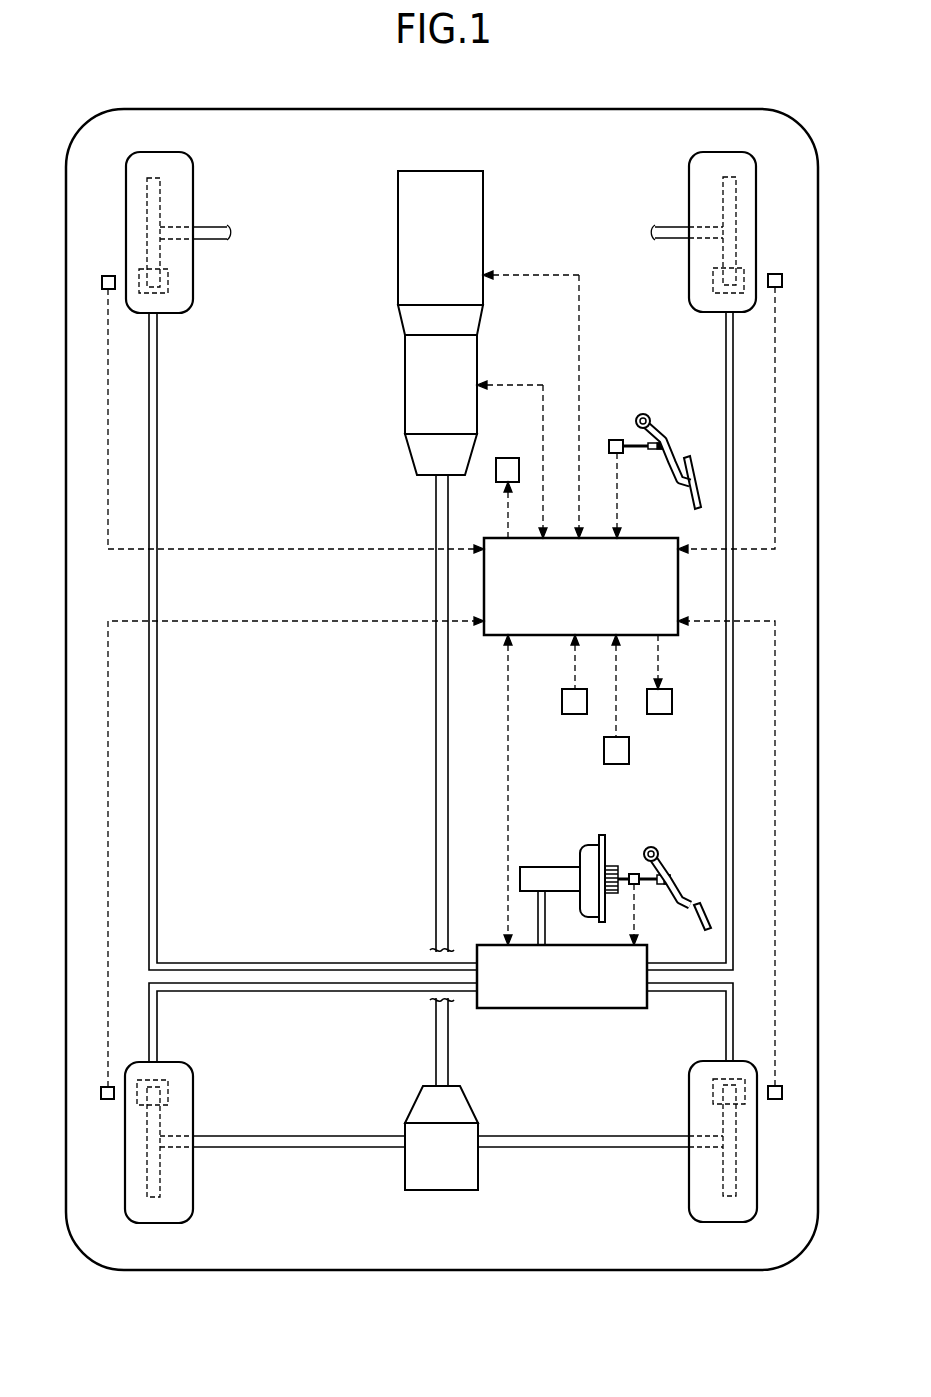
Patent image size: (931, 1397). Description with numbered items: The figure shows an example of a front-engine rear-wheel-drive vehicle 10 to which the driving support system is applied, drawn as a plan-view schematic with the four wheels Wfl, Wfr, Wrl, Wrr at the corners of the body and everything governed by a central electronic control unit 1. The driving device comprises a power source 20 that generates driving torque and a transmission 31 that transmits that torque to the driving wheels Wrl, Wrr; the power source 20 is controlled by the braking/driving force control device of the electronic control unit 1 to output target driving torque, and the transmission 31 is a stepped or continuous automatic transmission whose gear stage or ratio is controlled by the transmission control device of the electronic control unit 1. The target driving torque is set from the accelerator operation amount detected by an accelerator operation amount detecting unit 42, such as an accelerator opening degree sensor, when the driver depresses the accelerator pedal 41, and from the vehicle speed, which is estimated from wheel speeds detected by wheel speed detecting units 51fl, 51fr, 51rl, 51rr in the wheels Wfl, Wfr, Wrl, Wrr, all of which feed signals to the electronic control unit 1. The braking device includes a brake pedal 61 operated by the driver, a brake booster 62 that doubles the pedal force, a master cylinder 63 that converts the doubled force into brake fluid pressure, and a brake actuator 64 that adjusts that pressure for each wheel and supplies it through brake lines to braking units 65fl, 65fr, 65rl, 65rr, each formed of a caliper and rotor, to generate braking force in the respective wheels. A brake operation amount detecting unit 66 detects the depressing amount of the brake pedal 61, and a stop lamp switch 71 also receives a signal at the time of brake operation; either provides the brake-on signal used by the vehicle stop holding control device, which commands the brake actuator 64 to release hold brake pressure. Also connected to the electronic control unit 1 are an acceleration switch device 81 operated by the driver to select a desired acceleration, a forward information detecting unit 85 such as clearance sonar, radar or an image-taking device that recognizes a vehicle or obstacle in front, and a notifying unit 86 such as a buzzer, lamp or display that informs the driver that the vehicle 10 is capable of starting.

The vehicle 10 is at (652, 109).
The power source 20 is at (483, 210).
The transmission 31 is at (405, 380).
The stop lamp switch 71 is at (507, 458).
The accelerator operation amount detecting unit 42 is at (617, 440).
The accelerator pedal 41 is at (692, 465).
The electronic control unit 1 is at (678, 598).
The acceleration switch device 81 is at (575, 714).
The forward information detecting unit 85 is at (630, 750).
The notifying unit 86 is at (673, 700).
The brake booster 62 is at (599, 835).
The master cylinder 63 is at (545, 867).
The brake operation amount detecting unit 66 is at (634, 874).
The brake pedal 61 is at (690, 898).
The brake actuator 64 is at (630, 1008).
The front left wheel Wfl is at (193, 208).
The front right wheel Wfr is at (689, 208).
The rear left wheel Wrl is at (193, 1164).
The rear right wheel Wrr is at (689, 1164).
The wheel speed detecting unit 51fl is at (108, 276).
The wheel speed detecting unit 51fr is at (775, 274).
The wheel speed detecting unit 51rl is at (108, 1099).
The wheel speed detecting unit 51rr is at (775, 1099).
The braking unit 65fl is at (168, 283).
The braking unit 65fr is at (713, 282).
The braking unit 65rl is at (168, 1094).
The braking unit 65rr is at (713, 1092).